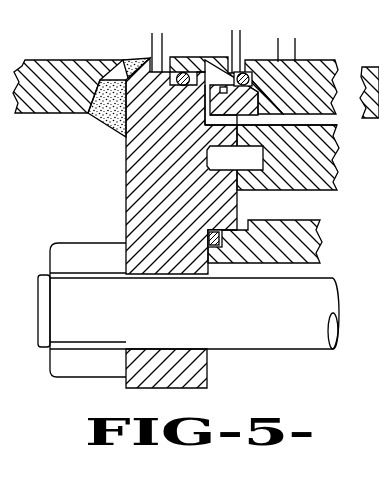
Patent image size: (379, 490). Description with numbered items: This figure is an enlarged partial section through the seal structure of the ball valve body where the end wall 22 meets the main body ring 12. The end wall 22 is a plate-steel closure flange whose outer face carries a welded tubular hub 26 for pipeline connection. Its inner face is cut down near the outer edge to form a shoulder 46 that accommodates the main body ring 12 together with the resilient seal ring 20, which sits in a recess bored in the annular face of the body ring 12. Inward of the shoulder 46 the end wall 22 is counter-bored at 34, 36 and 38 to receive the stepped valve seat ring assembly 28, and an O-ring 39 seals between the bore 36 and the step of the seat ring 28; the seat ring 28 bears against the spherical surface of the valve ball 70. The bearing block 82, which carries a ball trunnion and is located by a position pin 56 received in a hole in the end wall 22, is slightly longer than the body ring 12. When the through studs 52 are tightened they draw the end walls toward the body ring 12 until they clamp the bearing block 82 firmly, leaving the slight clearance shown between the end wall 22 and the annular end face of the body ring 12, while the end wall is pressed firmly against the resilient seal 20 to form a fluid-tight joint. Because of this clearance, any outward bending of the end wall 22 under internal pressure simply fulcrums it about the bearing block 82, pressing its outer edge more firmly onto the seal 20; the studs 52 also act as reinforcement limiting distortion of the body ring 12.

The main body ring 12 is at (289, 241).
The resilient seal ring 20 is at (222, 245).
The end wall 22 is at (142, 166).
The tubular hub 26 is at (68, 69).
The valve seat ring assembly 28 is at (287, 67).
The counter-bore 34 is at (171, 45).
The counter-bore 36 is at (241, 51).
The counter-bore 38 is at (260, 75).
The O-ring 39 is at (227, 59).
The shoulder 46 is at (119, 281).
The through stud 52 is at (194, 333).
The bearing block position pin 56 is at (287, 159).
The valve ball 70 is at (347, 109).
The bearing block 82 is at (303, 163).